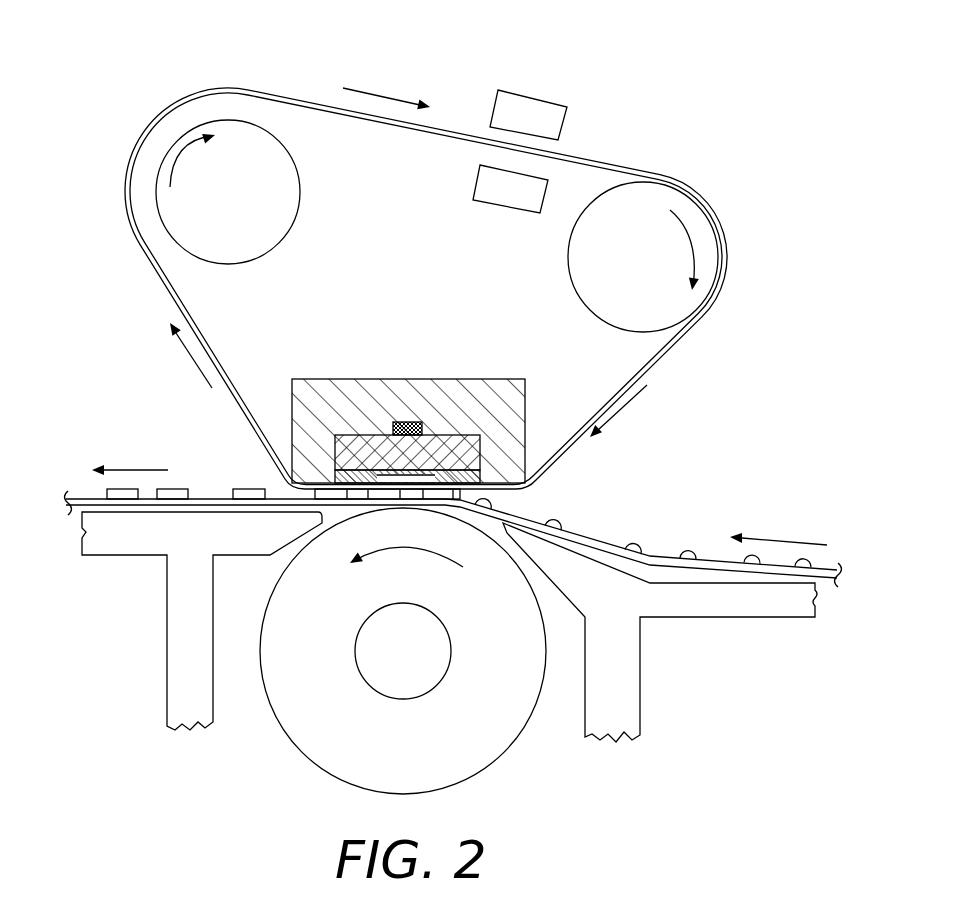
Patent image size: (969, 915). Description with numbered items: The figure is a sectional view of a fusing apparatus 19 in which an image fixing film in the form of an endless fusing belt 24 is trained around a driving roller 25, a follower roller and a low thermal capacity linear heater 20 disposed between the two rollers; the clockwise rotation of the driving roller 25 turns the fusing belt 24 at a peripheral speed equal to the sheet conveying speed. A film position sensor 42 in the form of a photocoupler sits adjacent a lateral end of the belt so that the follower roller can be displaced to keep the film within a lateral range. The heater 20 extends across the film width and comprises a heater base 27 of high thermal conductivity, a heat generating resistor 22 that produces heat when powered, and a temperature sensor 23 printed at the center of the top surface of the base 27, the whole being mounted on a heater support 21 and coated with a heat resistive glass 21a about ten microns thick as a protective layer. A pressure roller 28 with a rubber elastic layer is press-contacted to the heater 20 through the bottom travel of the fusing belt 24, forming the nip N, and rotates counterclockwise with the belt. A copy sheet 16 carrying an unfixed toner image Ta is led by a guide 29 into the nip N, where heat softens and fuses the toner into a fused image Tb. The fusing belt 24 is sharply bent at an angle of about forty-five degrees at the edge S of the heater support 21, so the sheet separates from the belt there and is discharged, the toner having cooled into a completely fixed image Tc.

The fusing apparatus 19 is at (110, 72).
The fusing belt 24 is at (302, 100).
The driving roller 25 is at (238, 133).
The film position sensor 42 is at (540, 100).
The heater base 27 is at (507, 378).
The linear heater 20 is at (414, 372).
The heater support 21 is at (380, 447).
The heat generating resistor 22 is at (375, 473).
The temperature sensor 23 is at (403, 380).
The heat resistive glass 21a is at (517, 482).
The edge S is at (294, 470).
The copy sheet 16 is at (82, 497).
The guide 29 is at (685, 620).
The pressure roller 28 is at (498, 757).
The nip N is at (438, 512).
The unfixed toner image Ta is at (688, 552).
The fused toner image Tb is at (375, 502).
The fixed toner image Tc is at (173, 499).